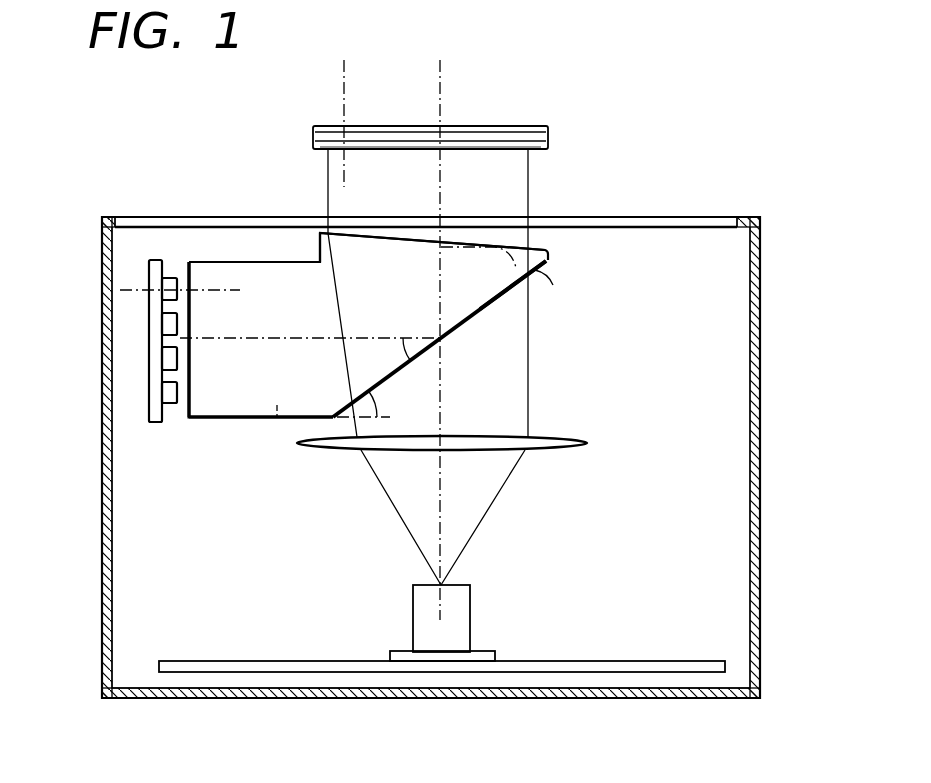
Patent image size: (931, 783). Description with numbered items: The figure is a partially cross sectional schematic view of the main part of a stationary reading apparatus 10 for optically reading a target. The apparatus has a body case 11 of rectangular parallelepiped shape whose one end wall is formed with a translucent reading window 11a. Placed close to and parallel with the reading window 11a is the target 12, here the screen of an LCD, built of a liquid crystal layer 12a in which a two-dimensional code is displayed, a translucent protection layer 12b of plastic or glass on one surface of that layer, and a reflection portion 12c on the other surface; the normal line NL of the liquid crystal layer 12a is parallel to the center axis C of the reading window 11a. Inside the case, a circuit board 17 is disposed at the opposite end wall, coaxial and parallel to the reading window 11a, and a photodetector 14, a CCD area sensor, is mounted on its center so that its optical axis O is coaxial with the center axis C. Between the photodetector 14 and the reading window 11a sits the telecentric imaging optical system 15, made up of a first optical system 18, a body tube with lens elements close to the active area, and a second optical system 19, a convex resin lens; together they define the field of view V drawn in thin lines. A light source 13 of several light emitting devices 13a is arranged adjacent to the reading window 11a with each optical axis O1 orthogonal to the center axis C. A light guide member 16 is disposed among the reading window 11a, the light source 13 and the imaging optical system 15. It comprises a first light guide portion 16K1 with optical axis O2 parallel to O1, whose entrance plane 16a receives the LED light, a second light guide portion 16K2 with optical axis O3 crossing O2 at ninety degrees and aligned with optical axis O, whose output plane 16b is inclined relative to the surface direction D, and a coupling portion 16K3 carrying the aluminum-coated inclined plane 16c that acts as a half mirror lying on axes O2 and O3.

The reading apparatus 10 is at (722, 112).
The body case 11 is at (750, 325).
The reading window 11a is at (722, 212).
The target (screen of the LCD) 12 is at (446, 141).
The liquid crystal layer 12a is at (313, 137).
The translucent protection layer 12b is at (543, 150).
The reflection portion 12c is at (522, 127).
The light source 13 is at (103, 284).
The light emitting devices (LEDs) 13a is at (170, 322).
The photodetector 14 is at (495, 657).
The imaging optical system 15 is at (510, 482).
The light guide member 16 is at (388, 342).
The entrance plane (one end outer plane) 16a is at (188, 412).
The output plane (one end outer plane) 16b is at (400, 236).
The inclined plane (half mirror plane) 16c is at (463, 330).
The first light guide portion 16K1 is at (278, 420).
The second light guide portion 16K2 is at (318, 242).
The coupling portion 16K3 is at (472, 285).
The circuit board 17 is at (228, 661).
The first optical system 18 is at (470, 597).
The second optical system 19 is at (575, 433).
The normal line NL is at (343, 62).
The center axis C is at (441, 84).
The field of view V is at (530, 365).
The surface direction D is at (552, 292).
The optical axis O is at (443, 510).
The optical axis of light emitting device O1 is at (205, 290).
The optical axis of first light guide portion O2 is at (282, 340).
The optical axis of second light guide portion O3 is at (440, 285).